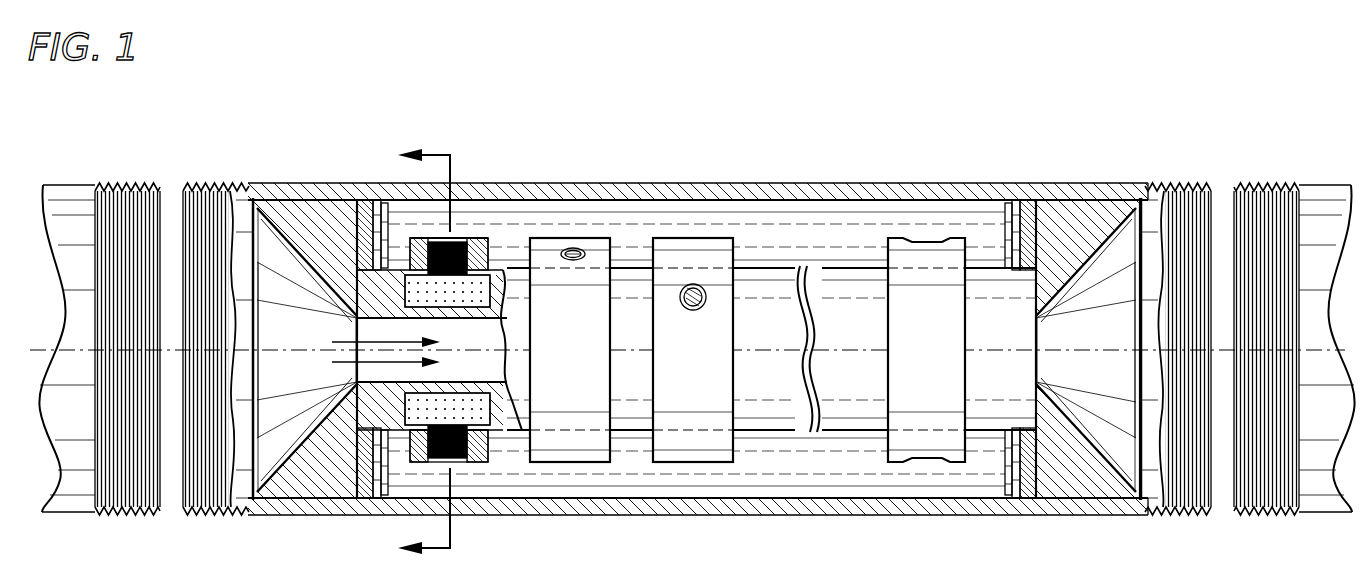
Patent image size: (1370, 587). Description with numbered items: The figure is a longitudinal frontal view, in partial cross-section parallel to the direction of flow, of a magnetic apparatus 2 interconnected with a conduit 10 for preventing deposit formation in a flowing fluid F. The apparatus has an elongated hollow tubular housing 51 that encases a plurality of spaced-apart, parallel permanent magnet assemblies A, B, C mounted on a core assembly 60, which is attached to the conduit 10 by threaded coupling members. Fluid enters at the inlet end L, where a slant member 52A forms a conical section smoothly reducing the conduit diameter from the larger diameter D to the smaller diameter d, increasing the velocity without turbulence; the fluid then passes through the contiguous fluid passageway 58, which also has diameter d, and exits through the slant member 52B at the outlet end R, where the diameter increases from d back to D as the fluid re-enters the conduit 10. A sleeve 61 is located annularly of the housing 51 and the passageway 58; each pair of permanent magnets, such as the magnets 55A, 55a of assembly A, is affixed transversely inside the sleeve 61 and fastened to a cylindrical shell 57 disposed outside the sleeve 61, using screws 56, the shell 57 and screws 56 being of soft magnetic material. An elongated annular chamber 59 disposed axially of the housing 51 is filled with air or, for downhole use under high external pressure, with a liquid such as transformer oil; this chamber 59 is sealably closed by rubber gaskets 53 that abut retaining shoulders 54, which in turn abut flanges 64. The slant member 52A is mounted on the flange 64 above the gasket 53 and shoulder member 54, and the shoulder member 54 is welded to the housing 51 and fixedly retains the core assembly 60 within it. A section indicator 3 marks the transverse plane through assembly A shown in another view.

The magnetic apparatus 2 is at (752, 192).
The conduit 10 is at (77, 184).
The housing 51 is at (332, 505).
The slant member 52A is at (293, 215).
The slant member 52B is at (1092, 207).
The rubber gasket 53 is at (362, 203).
The retaining shoulder 54 is at (372, 203).
The permanent magnet 55A is at (484, 287).
The permanent magnet 55a is at (495, 432).
The screw 56 is at (457, 237).
The shell 57 is at (475, 260).
The fluid passageway 58 is at (432, 350).
The annular chamber 59 is at (628, 470).
The core assembly 60 is at (773, 407).
The sleeve 61 is at (521, 440).
The flange 64 is at (340, 203).
The section line 3- 3 is at (414, 352).
The magnet assembly A is at (449, 320).
The magnet assembly B is at (570, 336).
The magnet assembly C is at (693, 336).
The larger diameter D is at (258, 328).
The smaller diameter d is at (354, 375).
The flowing fluid F is at (376, 352).
The inlet end L is at (182, 277).
The outlet end R is at (1220, 267).